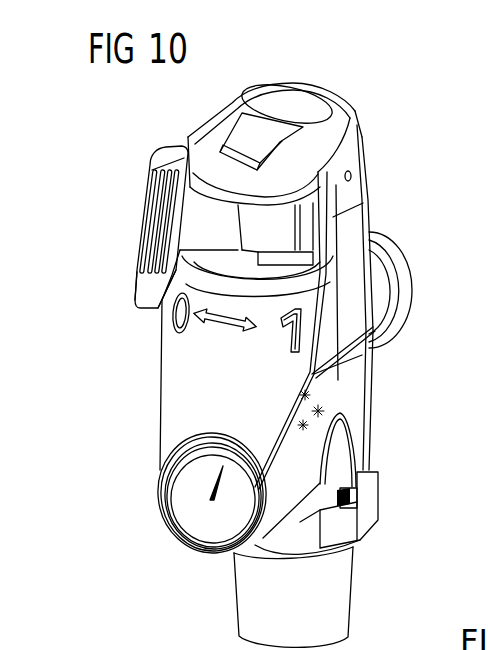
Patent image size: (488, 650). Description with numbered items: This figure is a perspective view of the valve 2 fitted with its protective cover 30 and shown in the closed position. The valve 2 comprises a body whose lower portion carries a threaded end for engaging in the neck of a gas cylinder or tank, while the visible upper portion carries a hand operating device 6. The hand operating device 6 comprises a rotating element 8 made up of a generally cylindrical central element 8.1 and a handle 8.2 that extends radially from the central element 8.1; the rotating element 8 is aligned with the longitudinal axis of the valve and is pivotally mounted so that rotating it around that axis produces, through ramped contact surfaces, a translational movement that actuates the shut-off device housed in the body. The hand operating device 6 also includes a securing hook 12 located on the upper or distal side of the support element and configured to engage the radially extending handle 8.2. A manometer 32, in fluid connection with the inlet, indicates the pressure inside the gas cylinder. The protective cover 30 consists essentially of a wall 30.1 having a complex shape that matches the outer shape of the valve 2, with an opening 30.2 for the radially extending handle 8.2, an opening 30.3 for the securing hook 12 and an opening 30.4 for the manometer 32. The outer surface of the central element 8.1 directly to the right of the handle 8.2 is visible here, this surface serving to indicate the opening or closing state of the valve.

The valve 2 is at (76, 167).
The hand operating device 6 is at (68, 246).
The rotating element 8 is at (120, 212).
The central element 8.1 is at (290, 221).
The handle 8.2 is at (150, 290).
The securing hook 12 is at (295, 92).
The protective cover 30 is at (125, 370).
The wall 30.1 is at (357, 360).
The opening 30.2 is at (315, 282).
The opening 30.3 is at (305, 134).
The opening 30.4 is at (173, 488).
The manometer 32 is at (190, 508).